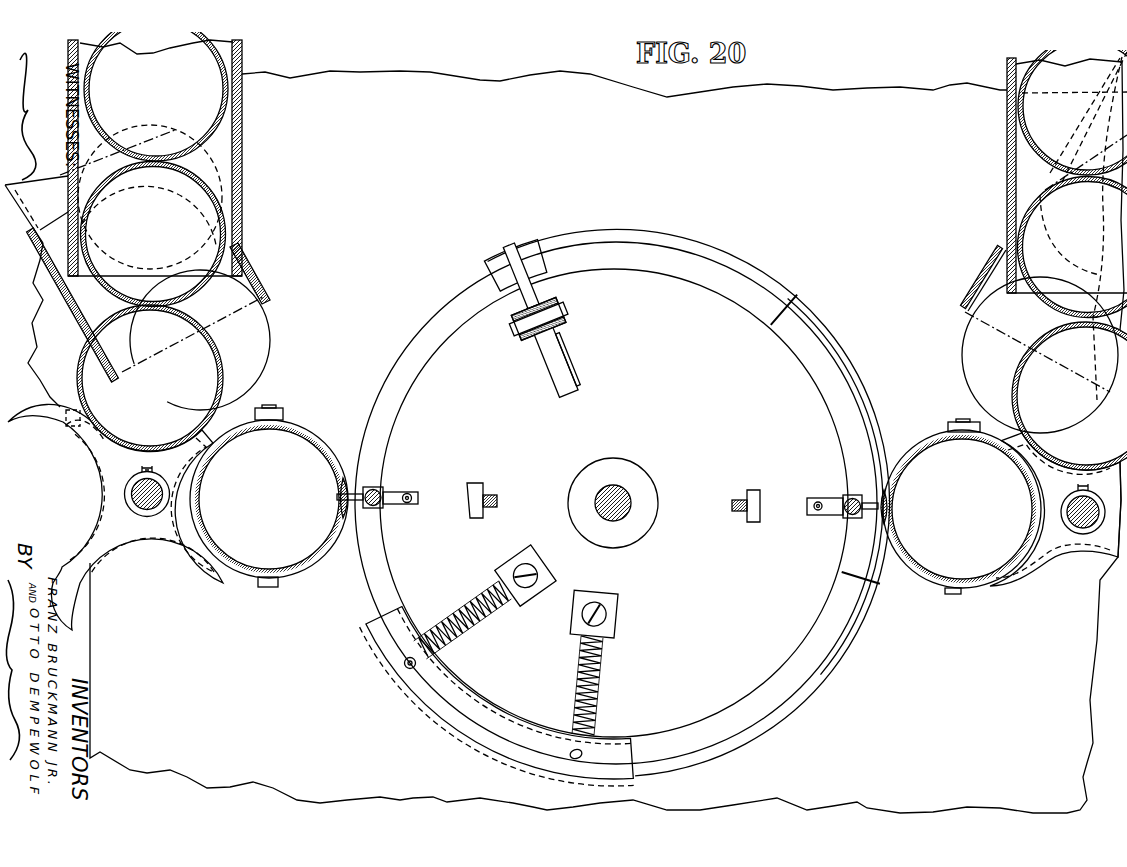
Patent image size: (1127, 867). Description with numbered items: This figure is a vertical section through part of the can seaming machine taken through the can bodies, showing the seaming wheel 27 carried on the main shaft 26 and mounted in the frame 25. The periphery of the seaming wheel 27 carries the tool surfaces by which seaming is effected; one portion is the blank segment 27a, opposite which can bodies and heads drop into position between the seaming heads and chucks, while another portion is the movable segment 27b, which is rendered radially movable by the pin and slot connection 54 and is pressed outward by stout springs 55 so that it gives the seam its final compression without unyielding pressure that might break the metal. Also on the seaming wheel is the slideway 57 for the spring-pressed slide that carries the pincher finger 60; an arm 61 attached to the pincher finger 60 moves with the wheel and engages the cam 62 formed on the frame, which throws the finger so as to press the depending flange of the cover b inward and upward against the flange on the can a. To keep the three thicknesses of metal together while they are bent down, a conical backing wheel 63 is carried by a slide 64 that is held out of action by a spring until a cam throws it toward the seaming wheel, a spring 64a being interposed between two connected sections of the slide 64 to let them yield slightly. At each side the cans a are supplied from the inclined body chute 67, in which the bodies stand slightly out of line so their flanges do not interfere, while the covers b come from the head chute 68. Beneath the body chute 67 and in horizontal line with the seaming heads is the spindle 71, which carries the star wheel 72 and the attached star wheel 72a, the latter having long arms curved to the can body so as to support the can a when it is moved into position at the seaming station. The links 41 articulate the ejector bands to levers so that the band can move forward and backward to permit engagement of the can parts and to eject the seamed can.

The frame 25 is at (360, 73).
The main shaft 26 is at (632, 497).
The seaming wheel 27 is at (614, 503).
The blank segment 27a is at (432, 332).
The movable segment 27b is at (440, 706).
The links 41 is at (284, 414).
The pin and slot connection 54 is at (402, 666).
The springs 55 is at (456, 628).
The slideway 57 is at (560, 344).
The pincher finger 60 is at (512, 256).
The arm 61 is at (576, 372).
The cam 62 is at (470, 516).
The backing wheel 63 is at (349, 478).
The slide 64 is at (383, 492).
The spring 64a is at (407, 503).
The body chute 67 is at (597, 166).
The head chute 68 is at (978, 278).
The spindle 71 is at (144, 514).
The star wheel 72 is at (113, 487).
The star wheel 72a is at (88, 528).
The can a is at (228, 68).
The cover b is at (585, 328).